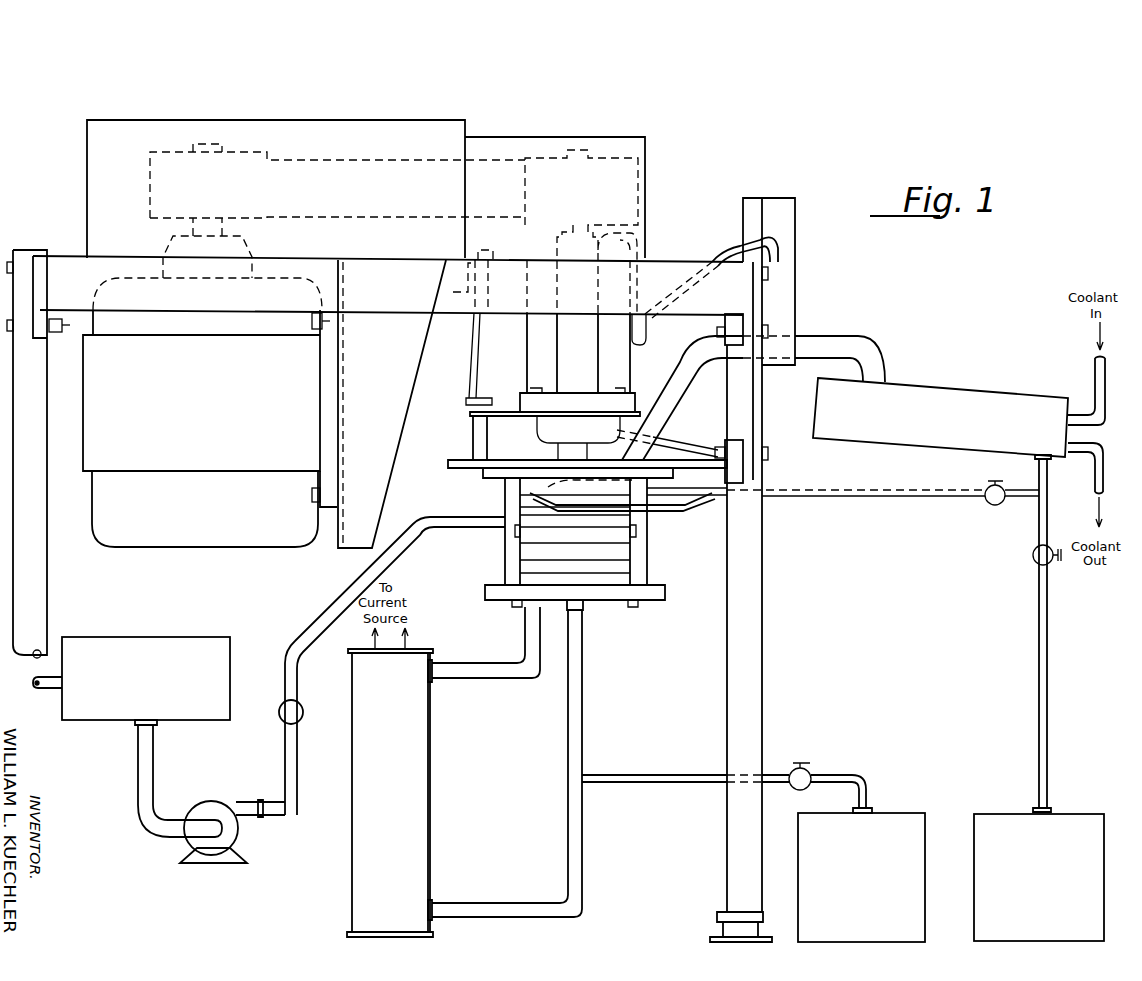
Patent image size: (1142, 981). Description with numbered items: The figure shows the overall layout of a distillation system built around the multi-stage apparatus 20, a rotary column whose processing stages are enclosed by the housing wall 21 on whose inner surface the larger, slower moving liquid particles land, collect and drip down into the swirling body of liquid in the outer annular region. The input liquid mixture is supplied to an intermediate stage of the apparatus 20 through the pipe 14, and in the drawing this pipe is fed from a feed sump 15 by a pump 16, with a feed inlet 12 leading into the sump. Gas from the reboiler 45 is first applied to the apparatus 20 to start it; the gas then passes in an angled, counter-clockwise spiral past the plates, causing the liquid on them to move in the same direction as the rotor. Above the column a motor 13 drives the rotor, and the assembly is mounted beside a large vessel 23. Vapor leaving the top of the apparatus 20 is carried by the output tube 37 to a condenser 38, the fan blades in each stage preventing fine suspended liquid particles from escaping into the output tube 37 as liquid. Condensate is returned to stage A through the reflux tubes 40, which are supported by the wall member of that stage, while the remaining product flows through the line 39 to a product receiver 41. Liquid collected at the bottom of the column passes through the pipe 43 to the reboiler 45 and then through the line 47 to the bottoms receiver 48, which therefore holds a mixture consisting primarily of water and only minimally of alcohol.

The feed inlet 12 is at (43, 688).
The motor 13 is at (588, 356).
The pipe 14 is at (495, 523).
The feed sump 15 is at (193, 652).
The pump 16 is at (207, 810).
The apparatus 20 is at (494, 556).
The housing wall 21 is at (620, 563).
The vessel 23 is at (219, 401).
The output tube 37 is at (660, 422).
The condenser 38 is at (1008, 408).
The product line 39 is at (1047, 480).
The reflux tubes 40 is at (677, 486).
The product receiver 41 is at (1019, 828).
The bottoms pipe 43 is at (578, 616).
The reboiler 45 is at (412, 752).
The bottoms line 47 is at (672, 775).
The "bottoms" receiver 48 is at (892, 833).